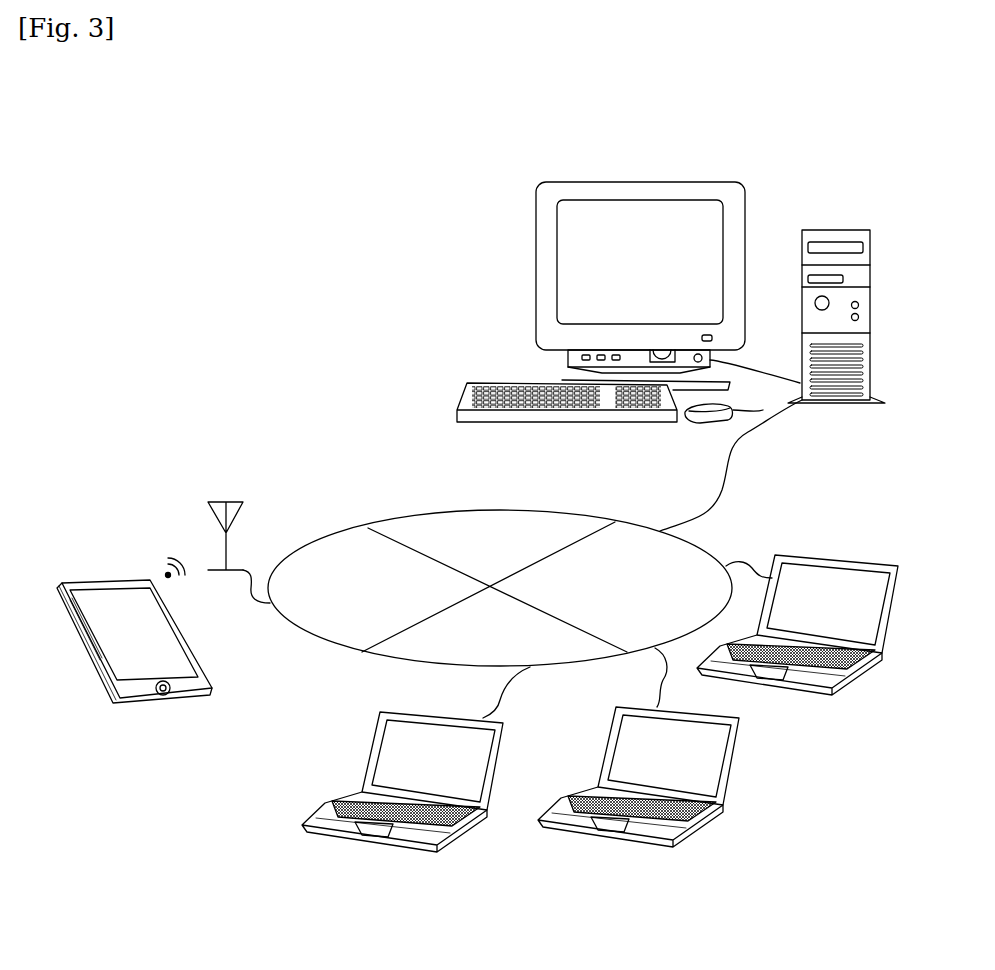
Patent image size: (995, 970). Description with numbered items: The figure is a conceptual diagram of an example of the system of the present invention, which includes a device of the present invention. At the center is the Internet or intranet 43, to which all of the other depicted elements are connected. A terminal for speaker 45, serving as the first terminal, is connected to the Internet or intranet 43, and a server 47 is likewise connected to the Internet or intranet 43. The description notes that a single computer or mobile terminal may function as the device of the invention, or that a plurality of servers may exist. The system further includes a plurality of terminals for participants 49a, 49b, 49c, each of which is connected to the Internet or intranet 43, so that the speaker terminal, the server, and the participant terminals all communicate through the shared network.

The Internet or intranet 43 is at (515, 512).
The terminal for speaker 45 is at (833, 560).
The server 47 is at (843, 232).
The terminal for participant 49a is at (115, 577).
The terminal for participant 49b is at (443, 732).
The terminal for participant 49c is at (665, 730).